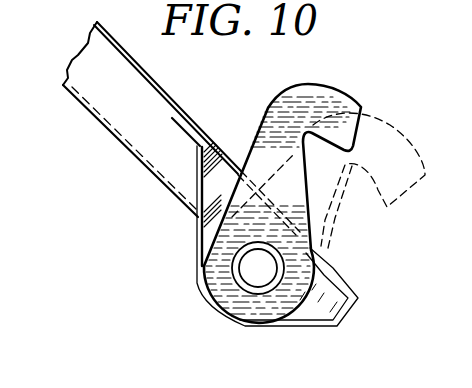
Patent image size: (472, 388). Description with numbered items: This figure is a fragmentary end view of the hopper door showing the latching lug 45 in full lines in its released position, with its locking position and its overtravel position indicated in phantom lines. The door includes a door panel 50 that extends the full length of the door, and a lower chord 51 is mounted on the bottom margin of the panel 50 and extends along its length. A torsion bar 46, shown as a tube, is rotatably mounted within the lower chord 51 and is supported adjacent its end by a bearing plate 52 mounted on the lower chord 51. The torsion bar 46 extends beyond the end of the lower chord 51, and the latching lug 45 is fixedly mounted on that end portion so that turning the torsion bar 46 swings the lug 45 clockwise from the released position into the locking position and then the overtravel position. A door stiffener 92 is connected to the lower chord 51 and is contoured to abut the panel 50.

The latching lug 45 is at (253, 189).
The torsion bar 46 is at (232, 261).
The door panel 50 is at (181, 128).
The lower chord 51 is at (197, 237).
The bearing plate 52 is at (217, 190).
The door stiffener 92 is at (123, 147).